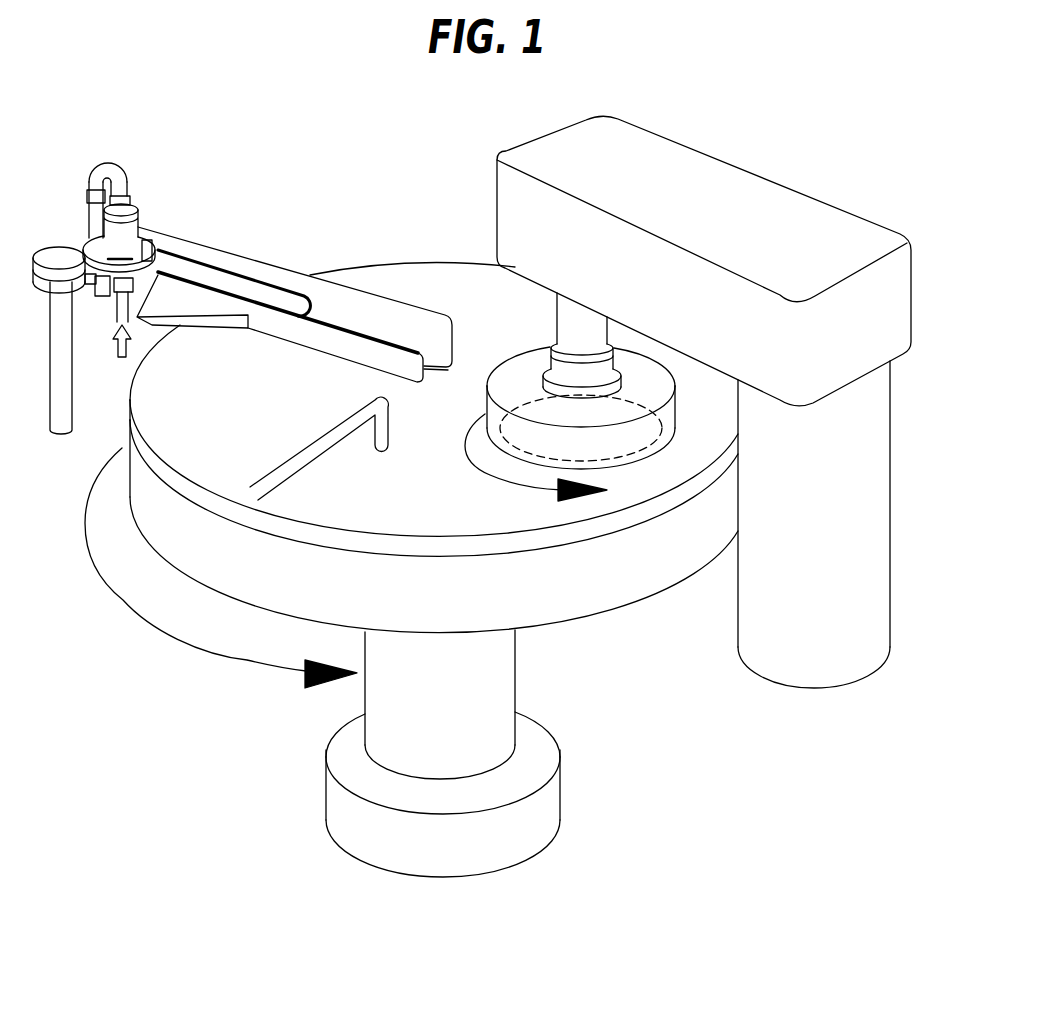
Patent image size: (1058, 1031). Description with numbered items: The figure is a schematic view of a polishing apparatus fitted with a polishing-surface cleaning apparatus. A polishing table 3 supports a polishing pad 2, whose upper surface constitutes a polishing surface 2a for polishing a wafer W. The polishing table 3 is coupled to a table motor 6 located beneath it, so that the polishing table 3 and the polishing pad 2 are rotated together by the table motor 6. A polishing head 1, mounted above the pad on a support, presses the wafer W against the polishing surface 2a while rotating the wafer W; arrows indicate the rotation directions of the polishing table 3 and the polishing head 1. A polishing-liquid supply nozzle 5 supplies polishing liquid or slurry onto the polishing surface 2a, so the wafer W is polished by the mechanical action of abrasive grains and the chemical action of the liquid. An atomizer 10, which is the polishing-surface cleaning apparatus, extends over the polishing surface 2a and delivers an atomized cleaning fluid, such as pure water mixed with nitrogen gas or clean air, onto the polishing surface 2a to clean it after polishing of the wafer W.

The polishing head 1 is at (513, 350).
The polishing pad 2 is at (553, 542).
The polishing surface 2a is at (430, 289).
The polishing table 3 is at (434, 452).
The polishing-liquid supply nozzle 5 is at (308, 446).
The table motor 6 is at (560, 790).
The atomizer 10 is at (252, 258).
The wafer W is at (648, 445).